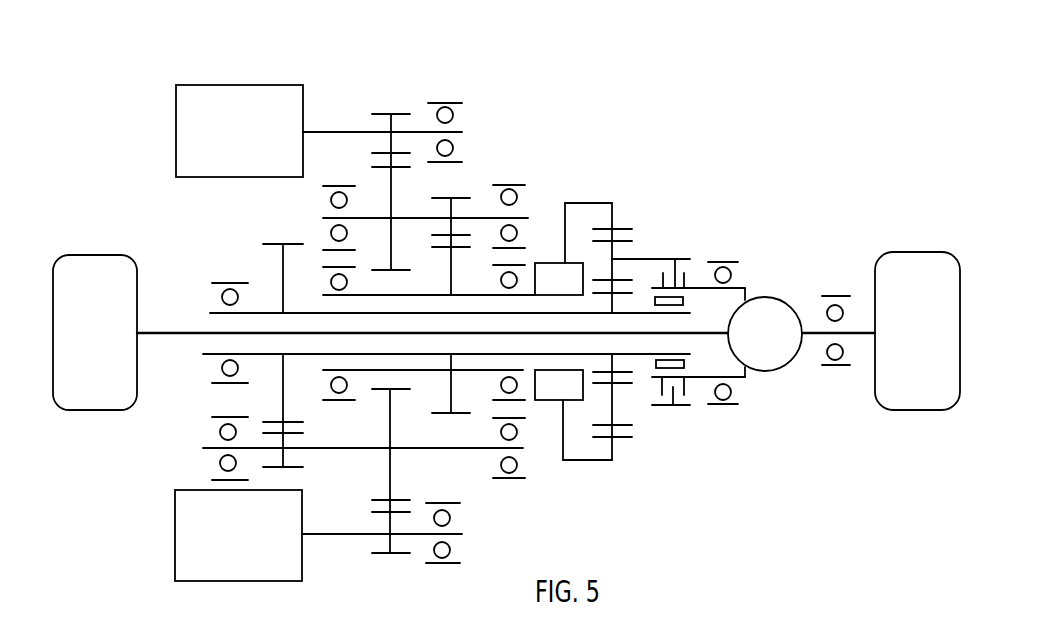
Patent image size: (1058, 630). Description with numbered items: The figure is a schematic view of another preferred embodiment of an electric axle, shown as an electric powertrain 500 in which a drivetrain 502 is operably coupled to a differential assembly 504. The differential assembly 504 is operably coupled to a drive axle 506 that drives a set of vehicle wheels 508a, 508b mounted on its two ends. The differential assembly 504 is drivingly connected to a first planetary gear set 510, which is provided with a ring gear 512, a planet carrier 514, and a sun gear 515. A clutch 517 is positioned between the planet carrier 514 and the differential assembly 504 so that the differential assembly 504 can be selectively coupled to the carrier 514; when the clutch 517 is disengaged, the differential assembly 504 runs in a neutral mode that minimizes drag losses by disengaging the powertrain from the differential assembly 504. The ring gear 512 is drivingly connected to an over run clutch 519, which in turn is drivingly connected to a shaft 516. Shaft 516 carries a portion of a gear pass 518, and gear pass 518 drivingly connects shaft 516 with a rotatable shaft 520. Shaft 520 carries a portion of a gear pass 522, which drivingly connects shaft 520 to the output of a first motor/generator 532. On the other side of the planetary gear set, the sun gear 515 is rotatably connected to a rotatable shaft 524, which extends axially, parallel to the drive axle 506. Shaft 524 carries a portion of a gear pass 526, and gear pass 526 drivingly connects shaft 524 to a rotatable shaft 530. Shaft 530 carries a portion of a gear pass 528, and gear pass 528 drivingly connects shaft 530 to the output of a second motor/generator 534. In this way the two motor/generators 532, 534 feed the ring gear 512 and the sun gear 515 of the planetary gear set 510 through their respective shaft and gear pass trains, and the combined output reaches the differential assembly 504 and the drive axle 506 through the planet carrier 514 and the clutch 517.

The electric powertrain 500 is at (790, 72).
The drivetrain 502 is at (585, 82).
The differential assembly 504 is at (778, 350).
The drive axle 506 is at (153, 333).
The vehicle wheel 508a is at (907, 252).
The vehicle wheel 508b is at (95, 255).
The first planetary gear set 510 is at (600, 183).
The ring gear 512 is at (620, 228).
The planet carrier 514 is at (613, 250).
The sun gear 515 is at (620, 375).
The shaft 516 is at (428, 291).
The clutch 517 is at (685, 252).
The gear pass 518 is at (460, 183).
The over run clutch 519 is at (576, 291).
The rotatable shaft 520 is at (422, 215).
The gear pass 522 is at (402, 112).
The rotatable shaft 524 is at (305, 372).
The gear pass 526 is at (305, 457).
The gear pass 528 is at (388, 560).
The rotatable shaft 530 is at (405, 457).
The first motor/generator 532 is at (250, 144).
The second motor/generator 534 is at (252, 547).